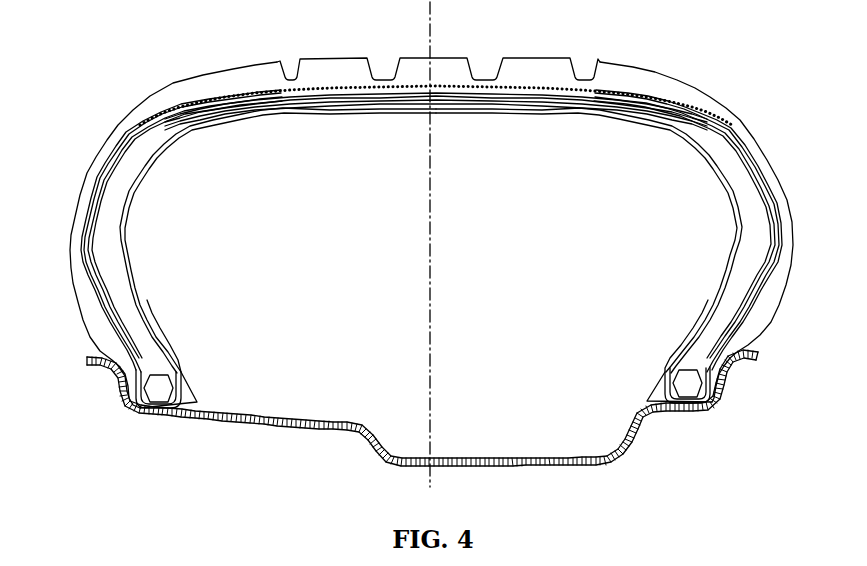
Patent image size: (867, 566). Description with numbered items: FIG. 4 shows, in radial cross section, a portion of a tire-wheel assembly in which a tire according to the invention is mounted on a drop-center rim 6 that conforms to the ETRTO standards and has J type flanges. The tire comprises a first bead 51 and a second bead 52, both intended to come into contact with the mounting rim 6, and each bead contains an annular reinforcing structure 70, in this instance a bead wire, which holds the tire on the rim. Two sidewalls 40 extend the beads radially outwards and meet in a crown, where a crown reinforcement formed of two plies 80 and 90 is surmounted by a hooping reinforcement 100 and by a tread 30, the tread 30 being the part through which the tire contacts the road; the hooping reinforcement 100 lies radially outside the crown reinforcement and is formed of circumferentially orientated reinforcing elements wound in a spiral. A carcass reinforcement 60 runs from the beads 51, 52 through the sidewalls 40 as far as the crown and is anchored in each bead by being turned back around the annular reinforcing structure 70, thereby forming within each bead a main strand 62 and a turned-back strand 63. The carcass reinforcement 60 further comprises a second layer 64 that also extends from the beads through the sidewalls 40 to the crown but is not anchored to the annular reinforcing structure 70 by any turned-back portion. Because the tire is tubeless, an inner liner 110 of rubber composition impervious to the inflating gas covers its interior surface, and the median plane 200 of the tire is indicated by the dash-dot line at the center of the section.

The drop-center rim 6 is at (277, 420).
The tread 30 is at (447, 68).
The sidewalls 40 is at (73, 233).
The first bead 51 is at (108, 338).
The second bead 52 is at (757, 333).
The carcass reinforcement 60 is at (98, 188).
The main strand 62 is at (148, 306).
The turned-back strand 63 is at (110, 313).
The second layer 64 is at (84, 250).
The annular reinforcing structure 70 is at (158, 388).
The crown reinforcement ply 80 is at (353, 96).
The crown reinforcement ply 90 is at (470, 90).
The hooping reinforcement 100 is at (328, 87).
The inner liner 110 is at (123, 230).
The median plane 200 is at (431, 172).